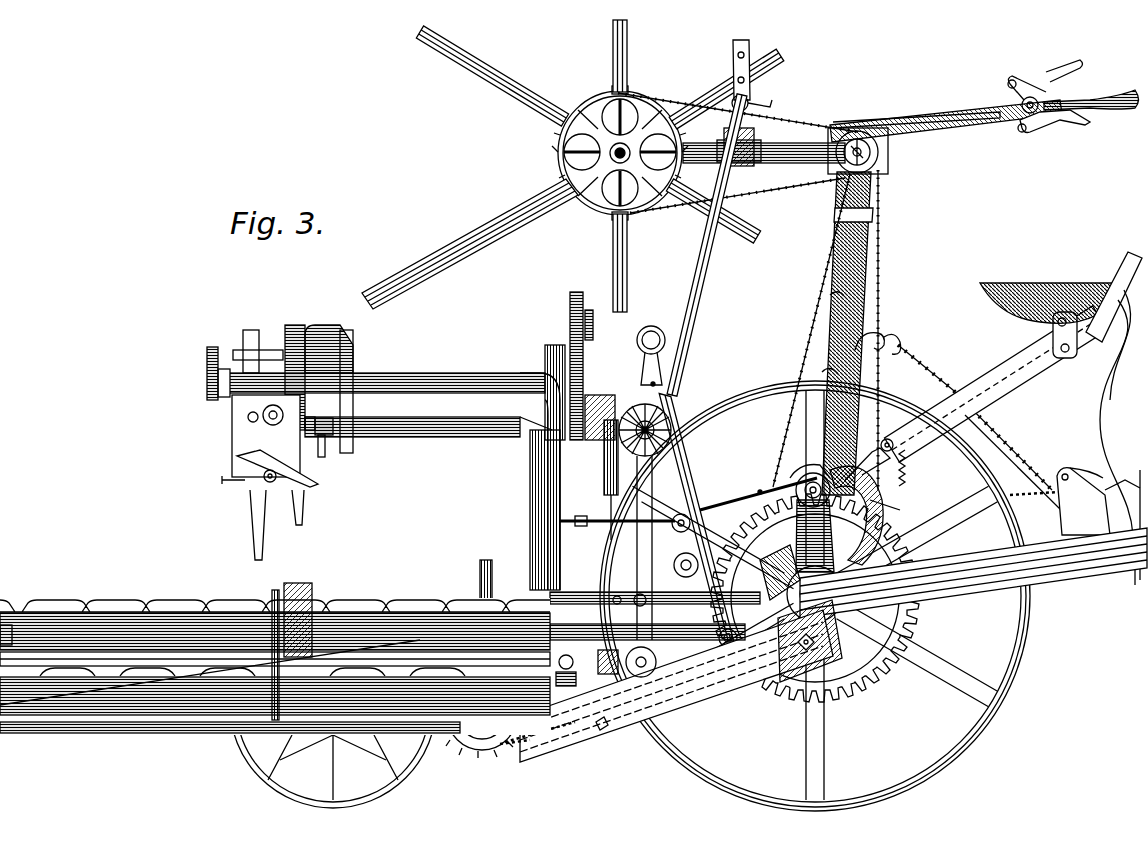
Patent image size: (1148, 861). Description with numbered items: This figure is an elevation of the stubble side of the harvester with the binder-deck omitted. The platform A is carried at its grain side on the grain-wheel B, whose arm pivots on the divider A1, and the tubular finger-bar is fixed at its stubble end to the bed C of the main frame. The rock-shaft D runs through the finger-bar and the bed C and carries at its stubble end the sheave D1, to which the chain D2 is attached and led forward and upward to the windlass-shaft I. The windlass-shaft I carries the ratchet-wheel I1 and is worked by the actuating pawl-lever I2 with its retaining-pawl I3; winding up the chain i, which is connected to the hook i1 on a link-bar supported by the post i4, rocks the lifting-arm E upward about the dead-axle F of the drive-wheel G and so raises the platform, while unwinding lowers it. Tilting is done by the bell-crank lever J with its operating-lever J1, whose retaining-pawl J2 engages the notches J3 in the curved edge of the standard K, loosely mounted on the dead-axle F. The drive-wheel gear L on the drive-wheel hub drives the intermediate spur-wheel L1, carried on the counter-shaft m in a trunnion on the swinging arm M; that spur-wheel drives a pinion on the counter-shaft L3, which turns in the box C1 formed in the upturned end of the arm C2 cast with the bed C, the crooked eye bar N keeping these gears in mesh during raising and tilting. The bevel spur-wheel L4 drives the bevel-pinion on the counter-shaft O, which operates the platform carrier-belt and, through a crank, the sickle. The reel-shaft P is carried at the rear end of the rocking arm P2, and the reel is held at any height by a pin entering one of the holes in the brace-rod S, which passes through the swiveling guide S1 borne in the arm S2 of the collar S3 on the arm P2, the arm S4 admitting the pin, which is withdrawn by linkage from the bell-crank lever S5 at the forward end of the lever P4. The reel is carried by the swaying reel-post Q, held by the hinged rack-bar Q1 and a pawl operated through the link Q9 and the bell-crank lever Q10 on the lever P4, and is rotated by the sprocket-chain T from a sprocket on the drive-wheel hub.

The reel-shaft P is at (588, 200).
The rocking arm P2 is at (738, 153).
The lever P4 is at (946, 119).
The brace-rod S is at (720, 94).
The swiveling guide S1 is at (736, 80).
The arm S2 is at (752, 103).
The collar S3 is at (739, 161).
The arm S4 is at (739, 146).
The bell-crank lever S5 is at (1054, 127).
The swaying reel-post Q is at (835, 335).
The rack-bar Q1 is at (1014, 463).
The link Q9 is at (880, 172).
The bell-crank lever Q10 is at (1073, 86).
The sprocket-chain T is at (834, 332).
The chain i is at (765, 488).
The hook i1 is at (968, 405).
The post i4 is at (874, 332).
The bell-crank lever J is at (1014, 393).
The operating-lever J1 is at (812, 518).
The retaining-pawl J2 is at (898, 473).
The notches J3 is at (893, 512).
The standard K is at (867, 506).
The windlass-shaft I is at (1108, 560).
The ratchet-wheel I1 is at (1122, 477).
The actuating pawl-lever I2 is at (1098, 524).
The retaining-pawl I3 is at (1082, 466).
The drive-wheel G is at (815, 596).
The drive-wheel gear L is at (821, 598).
The intermediate spur-wheel L1 is at (688, 486).
The counter-shaft L3 is at (665, 664).
The bevel spur-wheel L4 is at (638, 599).
The dead-axle F is at (815, 594).
The lifting-arm E is at (973, 573).
The rock-shaft D is at (373, 705).
The sheave D1 is at (508, 761).
The chain D2 is at (781, 627).
The bed C is at (774, 645).
The box C1 is at (815, 641).
The arm C2 is at (616, 671).
The swinging arm M is at (780, 572).
The crooked link or eye bar N is at (651, 522).
The counter-shaft m is at (688, 561).
The counter-shaft O is at (569, 668).
The platform A is at (412, 441).
The divider A1 is at (275, 659).
The grain-wheel B is at (620, 625).